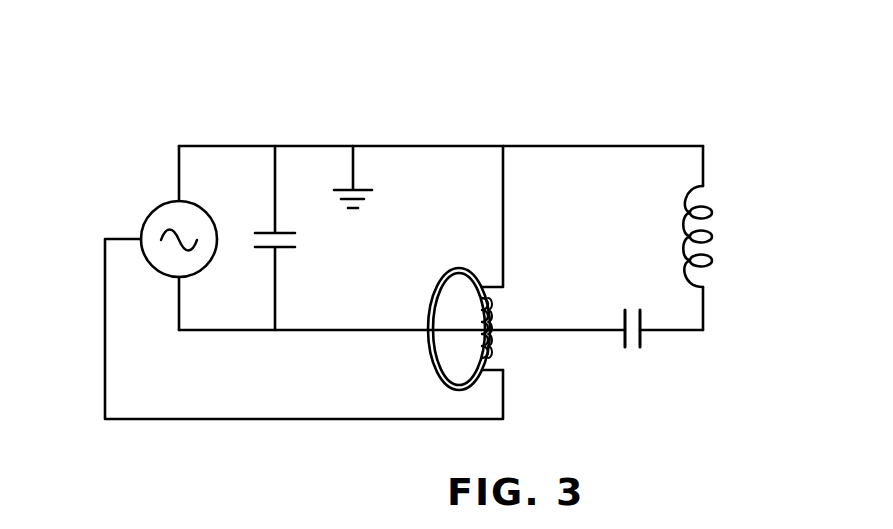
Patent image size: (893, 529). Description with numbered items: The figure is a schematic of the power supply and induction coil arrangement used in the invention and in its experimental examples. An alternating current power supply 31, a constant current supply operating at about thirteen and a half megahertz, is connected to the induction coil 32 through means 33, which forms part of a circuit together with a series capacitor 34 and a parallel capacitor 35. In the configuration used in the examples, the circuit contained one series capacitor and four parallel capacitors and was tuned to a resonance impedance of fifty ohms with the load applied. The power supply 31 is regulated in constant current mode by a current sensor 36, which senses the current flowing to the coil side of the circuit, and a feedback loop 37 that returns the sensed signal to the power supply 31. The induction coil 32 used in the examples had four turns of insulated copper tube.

The alternating current power supply 31 is at (153, 209).
The induction coil 32 is at (711, 231).
The means 33 is at (399, 144).
The series capacitor 34 is at (632, 350).
The parallel capacitor 35 is at (296, 242).
The current sensor 36 is at (493, 338).
The feedback loop 37 is at (303, 421).